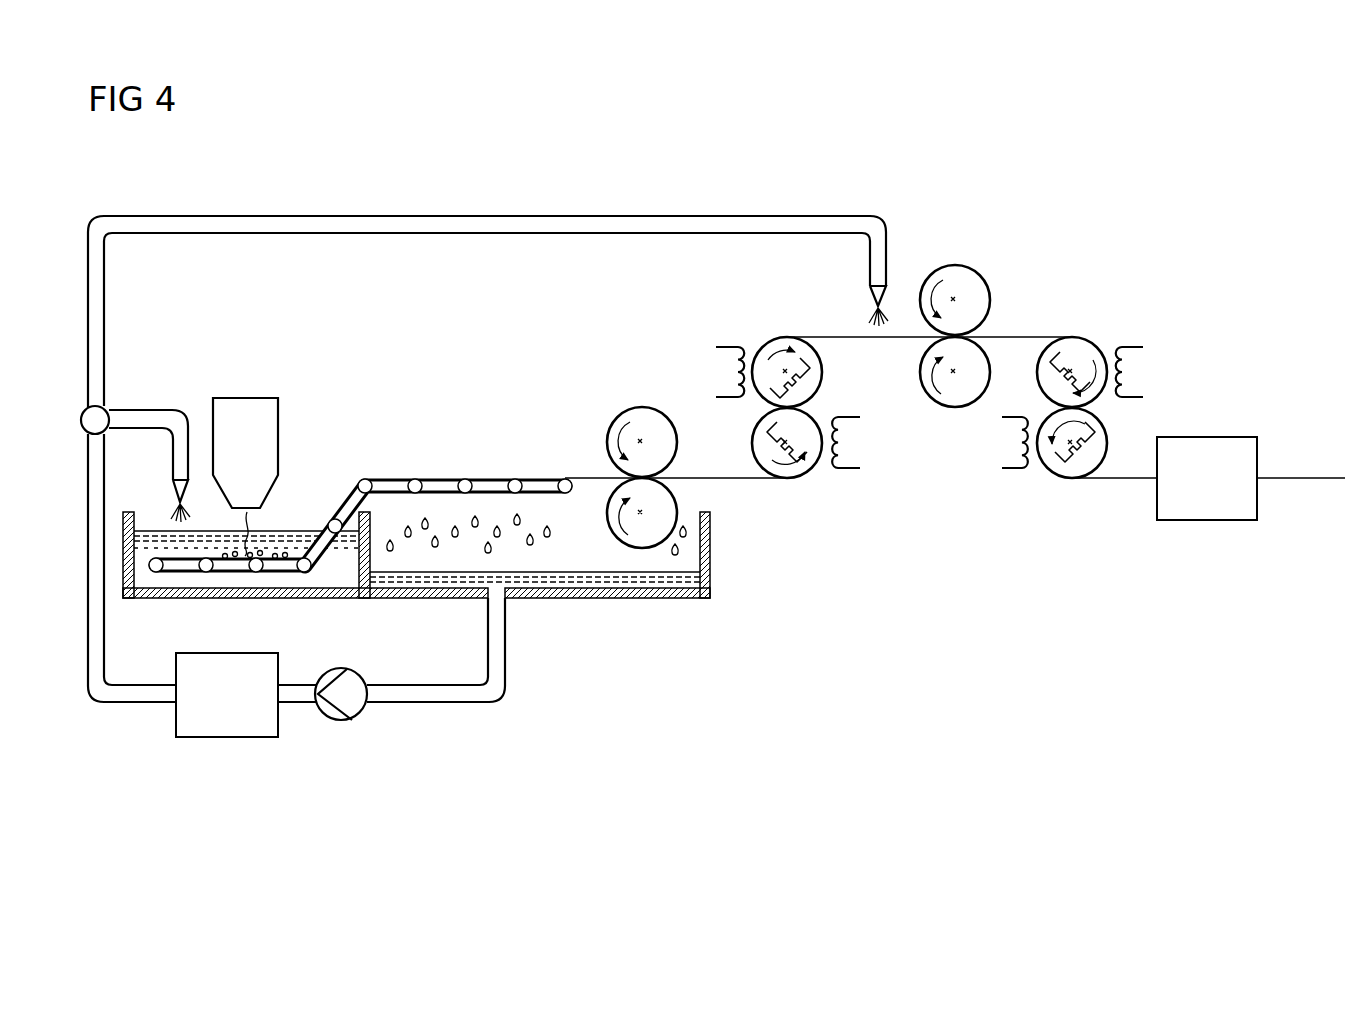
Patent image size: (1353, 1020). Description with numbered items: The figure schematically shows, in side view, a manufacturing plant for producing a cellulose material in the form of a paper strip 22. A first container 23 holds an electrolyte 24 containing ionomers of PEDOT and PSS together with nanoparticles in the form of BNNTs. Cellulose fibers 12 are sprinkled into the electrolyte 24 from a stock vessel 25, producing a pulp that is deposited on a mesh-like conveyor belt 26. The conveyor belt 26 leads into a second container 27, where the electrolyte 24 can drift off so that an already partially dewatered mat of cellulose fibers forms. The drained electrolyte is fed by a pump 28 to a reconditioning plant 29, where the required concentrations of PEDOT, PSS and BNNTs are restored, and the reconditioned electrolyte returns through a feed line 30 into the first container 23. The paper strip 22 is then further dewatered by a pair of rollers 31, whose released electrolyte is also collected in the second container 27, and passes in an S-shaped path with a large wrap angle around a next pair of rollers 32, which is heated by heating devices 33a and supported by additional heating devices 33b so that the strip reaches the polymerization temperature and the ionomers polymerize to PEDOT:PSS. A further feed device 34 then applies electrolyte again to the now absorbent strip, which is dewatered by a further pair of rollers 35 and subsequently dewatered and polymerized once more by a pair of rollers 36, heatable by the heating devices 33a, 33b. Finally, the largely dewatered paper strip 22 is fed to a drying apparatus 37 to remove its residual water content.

The cellulose fibers 12 is at (248, 516).
The paper strip 22 is at (1020, 336).
The first container 23 is at (197, 614).
The electrolyte 24 is at (355, 590).
The stock vessel 25 is at (246, 398).
The mesh-like conveyor belt 26 is at (478, 478).
The second container 27 is at (643, 616).
The pump 28 is at (344, 722).
The reconditioning plant 29 is at (227, 740).
The feed line 30 is at (143, 418).
The pair of rollers 31 is at (640, 400).
The pair of rollers 32 is at (778, 325).
The heating devices 33a is at (808, 360).
The additional heating devices 33b is at (722, 347).
The further feed device 34 is at (868, 265).
The further pair of rollers 35 is at (958, 255).
The pair of rollers 36 is at (1077, 315).
The drying apparatus 37 is at (1207, 520).